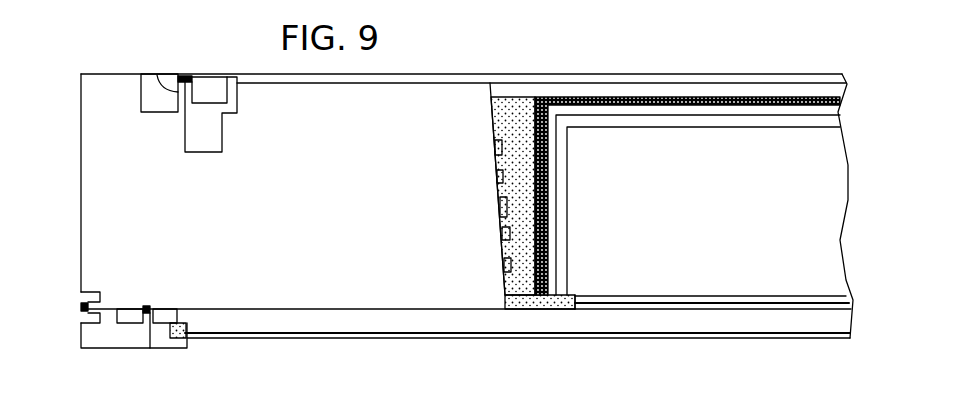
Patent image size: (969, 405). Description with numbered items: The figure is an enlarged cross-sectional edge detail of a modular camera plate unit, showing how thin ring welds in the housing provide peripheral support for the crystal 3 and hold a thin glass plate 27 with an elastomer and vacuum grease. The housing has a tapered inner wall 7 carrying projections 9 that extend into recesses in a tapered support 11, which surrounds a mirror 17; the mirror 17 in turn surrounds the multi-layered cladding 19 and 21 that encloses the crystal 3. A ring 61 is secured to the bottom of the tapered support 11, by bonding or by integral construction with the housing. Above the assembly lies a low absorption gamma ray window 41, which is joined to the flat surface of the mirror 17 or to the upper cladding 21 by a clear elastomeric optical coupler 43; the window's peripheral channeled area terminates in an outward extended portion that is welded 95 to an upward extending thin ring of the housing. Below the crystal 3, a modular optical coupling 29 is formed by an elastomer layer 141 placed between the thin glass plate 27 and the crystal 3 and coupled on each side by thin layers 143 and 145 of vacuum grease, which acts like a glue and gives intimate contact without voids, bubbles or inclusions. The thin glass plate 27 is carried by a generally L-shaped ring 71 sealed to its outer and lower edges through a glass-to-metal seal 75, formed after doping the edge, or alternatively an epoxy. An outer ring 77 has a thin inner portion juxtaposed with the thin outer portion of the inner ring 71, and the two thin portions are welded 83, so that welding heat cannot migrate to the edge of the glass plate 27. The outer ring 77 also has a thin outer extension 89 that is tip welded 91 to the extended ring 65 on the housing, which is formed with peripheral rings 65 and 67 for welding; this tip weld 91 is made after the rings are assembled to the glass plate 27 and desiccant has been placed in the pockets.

The crystal 3 is at (773, 272).
The tapered inner wall 7 is at (493, 136).
The projections 9 is at (503, 202).
The tapered support 11 is at (516, 156).
The mirror 17 is at (549, 191).
The cladding 19 is at (566, 236).
The upper cladding 21 is at (551, 207).
The thin glass plate 27 is at (741, 337).
The modular optical coupling 29 is at (670, 262).
The gamma ray window 41 is at (660, 74).
The clear elastomeric optical coupler 43 is at (530, 85).
The ring 61 is at (561, 310).
The extended ring 65 is at (84, 299).
The peripheral ring 67 is at (160, 67).
The L-shaped ring 71 is at (173, 349).
The glass-to-metal seal 75 is at (190, 338).
The outer ring 77 is at (92, 348).
The weld 83 is at (167, 303).
The thin outer extension 89 is at (93, 316).
The tip weld 91 is at (82, 311).
The weld 95 is at (187, 75).
The elastomer layer 141 is at (808, 306).
The thin layer of vacuum grease 143 is at (729, 297).
The thin layer of vacuum grease 145 is at (673, 310).